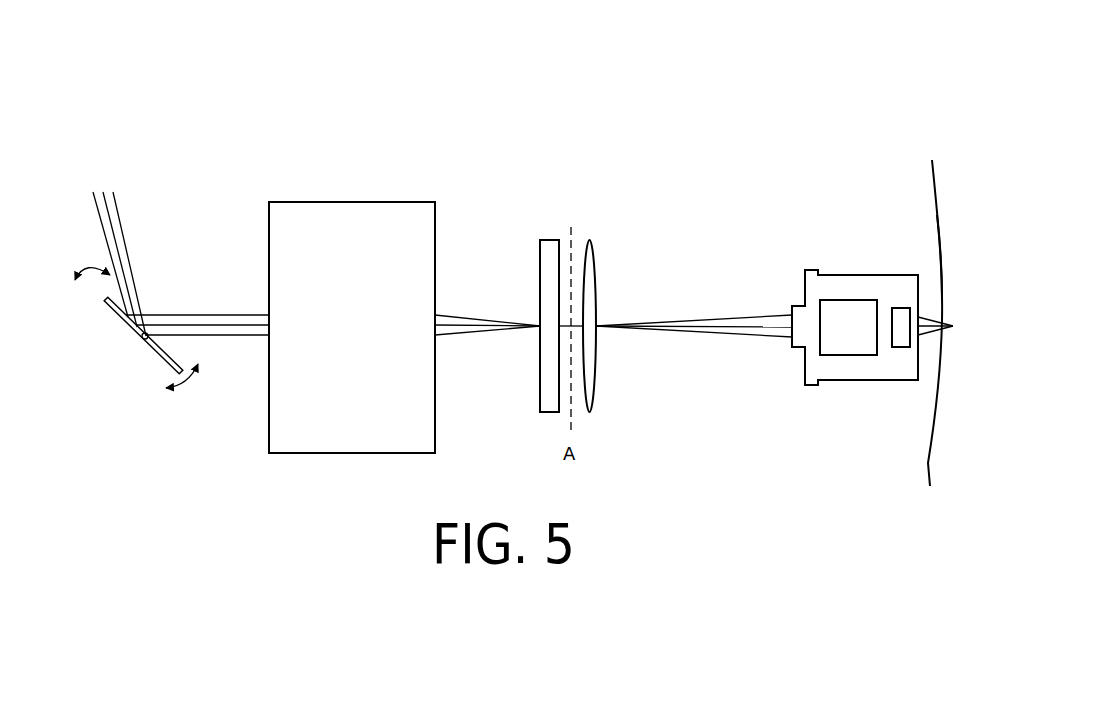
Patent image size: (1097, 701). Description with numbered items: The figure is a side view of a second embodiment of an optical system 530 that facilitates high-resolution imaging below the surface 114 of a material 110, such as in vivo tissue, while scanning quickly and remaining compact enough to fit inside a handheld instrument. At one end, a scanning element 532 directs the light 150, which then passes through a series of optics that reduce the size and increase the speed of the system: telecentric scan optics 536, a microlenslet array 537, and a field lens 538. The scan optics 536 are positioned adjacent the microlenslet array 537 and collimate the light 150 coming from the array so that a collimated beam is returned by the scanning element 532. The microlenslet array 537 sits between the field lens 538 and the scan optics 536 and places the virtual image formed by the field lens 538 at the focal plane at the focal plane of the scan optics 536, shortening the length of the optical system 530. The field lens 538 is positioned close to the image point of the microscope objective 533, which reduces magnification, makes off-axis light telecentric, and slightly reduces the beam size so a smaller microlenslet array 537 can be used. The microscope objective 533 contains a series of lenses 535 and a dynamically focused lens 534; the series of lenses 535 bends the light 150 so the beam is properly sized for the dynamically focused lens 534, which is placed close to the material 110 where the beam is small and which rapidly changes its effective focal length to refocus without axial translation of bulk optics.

The optical system 530 is at (207, 66).
The light 150 is at (137, 265).
The scanning element 532 is at (162, 362).
The scan optics 536 is at (269, 220).
The microlenslet array 537 is at (540, 252).
The field lens 538 is at (596, 252).
The microscope objective 533 is at (902, 273).
The series of lenses 535 is at (850, 355).
The dynamically focused lens 534 is at (898, 348).
The material 110 is at (938, 189).
The surface 114 is at (936, 228).